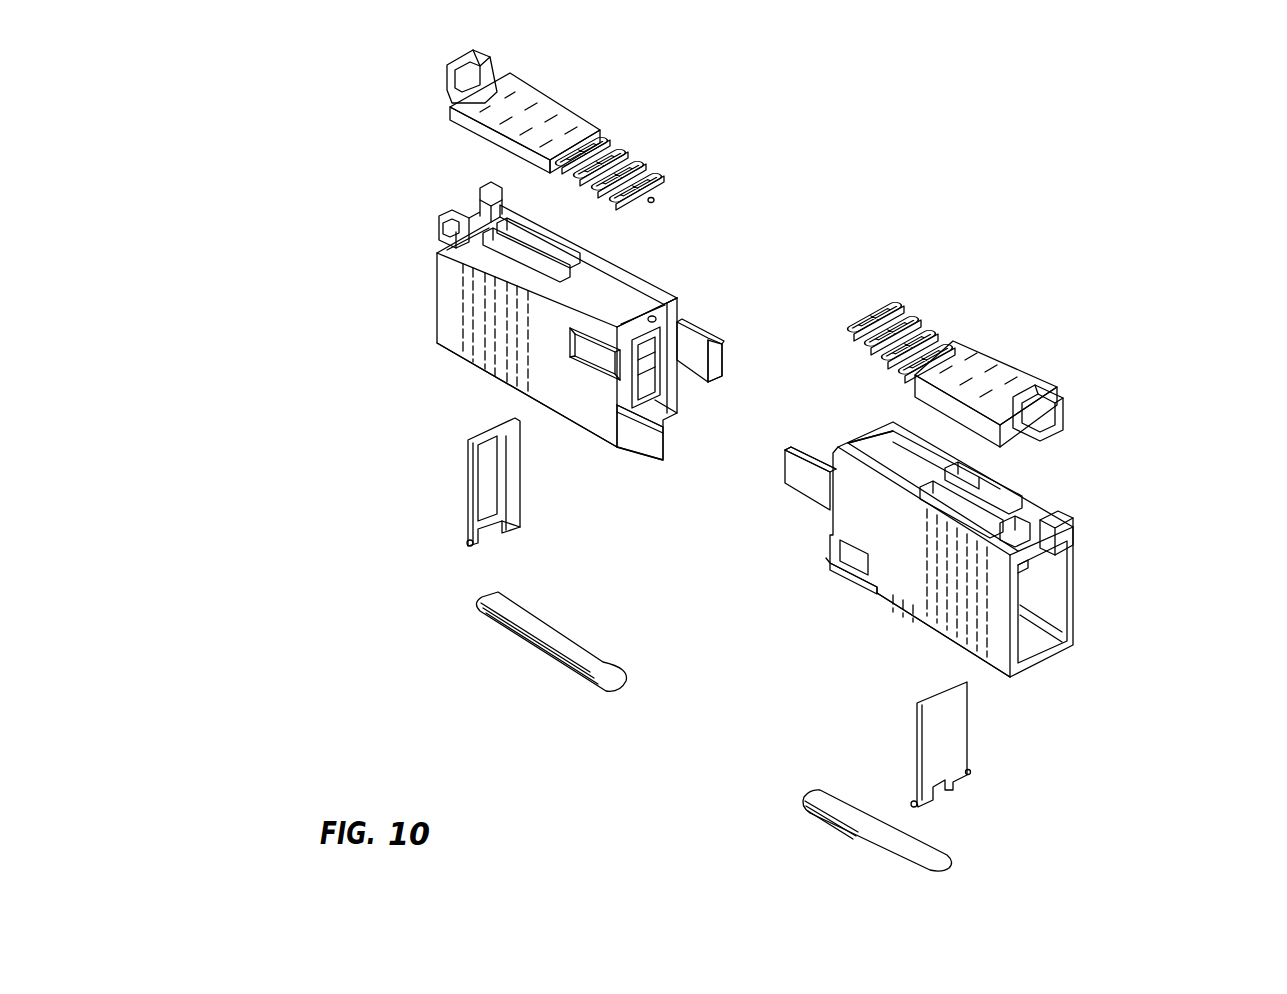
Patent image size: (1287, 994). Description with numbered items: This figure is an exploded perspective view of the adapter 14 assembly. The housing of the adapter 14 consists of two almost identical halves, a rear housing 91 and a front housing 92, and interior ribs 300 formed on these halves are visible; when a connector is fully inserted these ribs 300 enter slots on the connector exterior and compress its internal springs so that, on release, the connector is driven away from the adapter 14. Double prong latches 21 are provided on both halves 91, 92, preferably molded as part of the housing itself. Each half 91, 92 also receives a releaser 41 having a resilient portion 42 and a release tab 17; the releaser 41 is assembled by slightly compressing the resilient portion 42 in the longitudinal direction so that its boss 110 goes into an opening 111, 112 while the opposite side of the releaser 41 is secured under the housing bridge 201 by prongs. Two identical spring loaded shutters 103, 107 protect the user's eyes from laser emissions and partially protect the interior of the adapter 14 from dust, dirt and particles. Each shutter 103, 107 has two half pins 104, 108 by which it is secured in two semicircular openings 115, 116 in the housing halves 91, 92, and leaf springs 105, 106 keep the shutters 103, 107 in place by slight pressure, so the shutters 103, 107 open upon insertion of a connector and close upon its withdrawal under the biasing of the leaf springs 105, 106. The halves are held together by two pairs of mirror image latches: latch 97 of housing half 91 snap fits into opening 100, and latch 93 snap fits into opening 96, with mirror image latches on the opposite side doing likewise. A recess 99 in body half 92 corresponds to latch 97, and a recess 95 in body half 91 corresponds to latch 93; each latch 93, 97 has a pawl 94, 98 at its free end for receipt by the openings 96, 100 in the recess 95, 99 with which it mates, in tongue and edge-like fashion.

The adapter 14 is at (873, 256).
The release tab 17 is at (1058, 400).
The double prong latch 21 is at (467, 243).
The releaser 41 is at (520, 125).
The resilient portion 42 is at (642, 162).
The rear housing 91 is at (505, 322).
The front housing 92 is at (935, 591).
The latch 93 is at (692, 342).
The pawl 94 is at (714, 362).
The recess 95 is at (602, 357).
The opening 96 is at (577, 353).
The latch 97 is at (663, 456).
The pawl 98 is at (660, 413).
The recess 99 is at (852, 553).
The opening 100 is at (877, 586).
The shutter 103 is at (942, 735).
The half pin 104 is at (968, 773).
The leaf spring 105 is at (860, 820).
The leaf spring 106 is at (555, 635).
The shutter 107 is at (492, 470).
The half pin 108 is at (463, 543).
The boss 110 is at (653, 201).
The opening 111 is at (651, 318).
The opening 112 is at (872, 463).
The semicircular opening 115 is at (965, 646).
The semicircular opening 116 is at (489, 390).
The housing bridge 201 is at (478, 205).
The rib 300 is at (653, 362).